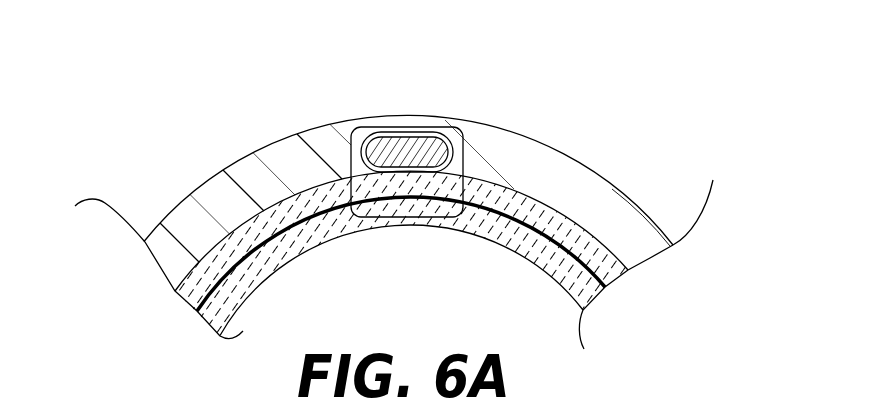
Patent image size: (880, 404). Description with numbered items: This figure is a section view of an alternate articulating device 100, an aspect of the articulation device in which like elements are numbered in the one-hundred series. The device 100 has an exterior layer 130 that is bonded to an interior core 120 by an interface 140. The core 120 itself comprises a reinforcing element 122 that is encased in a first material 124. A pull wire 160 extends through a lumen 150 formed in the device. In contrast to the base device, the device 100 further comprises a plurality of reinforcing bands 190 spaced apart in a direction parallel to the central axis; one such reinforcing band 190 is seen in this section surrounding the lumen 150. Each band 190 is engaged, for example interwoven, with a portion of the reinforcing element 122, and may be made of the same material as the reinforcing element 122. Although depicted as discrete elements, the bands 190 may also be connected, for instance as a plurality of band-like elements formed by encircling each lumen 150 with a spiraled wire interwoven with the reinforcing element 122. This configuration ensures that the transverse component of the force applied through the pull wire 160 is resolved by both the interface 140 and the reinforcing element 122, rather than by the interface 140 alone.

The articulation device 100 is at (514, 45).
The interior core 120 is at (598, 288).
The reinforcing element 122 is at (192, 303).
The first material 124 is at (306, 242).
The exterior layer 130 is at (577, 160).
The interface 140 is at (618, 258).
The lumen 150 is at (386, 134).
The pull wire 160 is at (428, 142).
The reinforcing band 190 is at (351, 150).